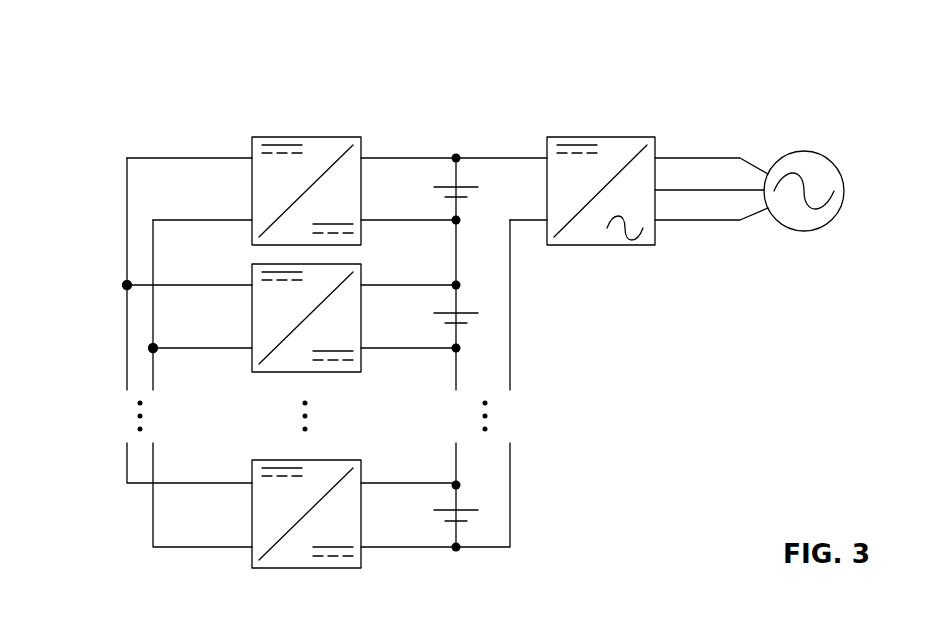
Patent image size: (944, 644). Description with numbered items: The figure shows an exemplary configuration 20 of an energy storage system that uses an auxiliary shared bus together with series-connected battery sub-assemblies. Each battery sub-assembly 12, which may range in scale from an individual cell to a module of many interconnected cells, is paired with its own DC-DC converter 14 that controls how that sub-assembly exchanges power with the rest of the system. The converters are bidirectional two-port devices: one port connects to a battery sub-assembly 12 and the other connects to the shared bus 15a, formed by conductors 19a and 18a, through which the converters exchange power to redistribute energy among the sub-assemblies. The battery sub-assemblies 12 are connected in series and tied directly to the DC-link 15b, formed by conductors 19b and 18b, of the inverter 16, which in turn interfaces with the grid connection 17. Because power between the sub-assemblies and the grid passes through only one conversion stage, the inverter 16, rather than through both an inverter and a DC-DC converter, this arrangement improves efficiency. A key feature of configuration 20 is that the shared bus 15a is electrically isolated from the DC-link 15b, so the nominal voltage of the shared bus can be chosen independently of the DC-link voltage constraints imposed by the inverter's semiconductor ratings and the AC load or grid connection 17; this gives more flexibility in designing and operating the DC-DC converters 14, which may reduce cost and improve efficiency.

The battery sub-assembly 12 is at (456, 510).
The DC-DC converter 14 is at (312, 137).
The shared bus 15a is at (113, 320).
The DC-link 15b is at (526, 295).
The inverter 16 is at (615, 245).
The grid connection 17 is at (812, 153).
The conductor 18a is at (152, 512).
The conductor 18b is at (512, 347).
The conductor 19a is at (183, 157).
The conductor 19b is at (399, 157).
The exemplary configuration 20 is at (522, 55).